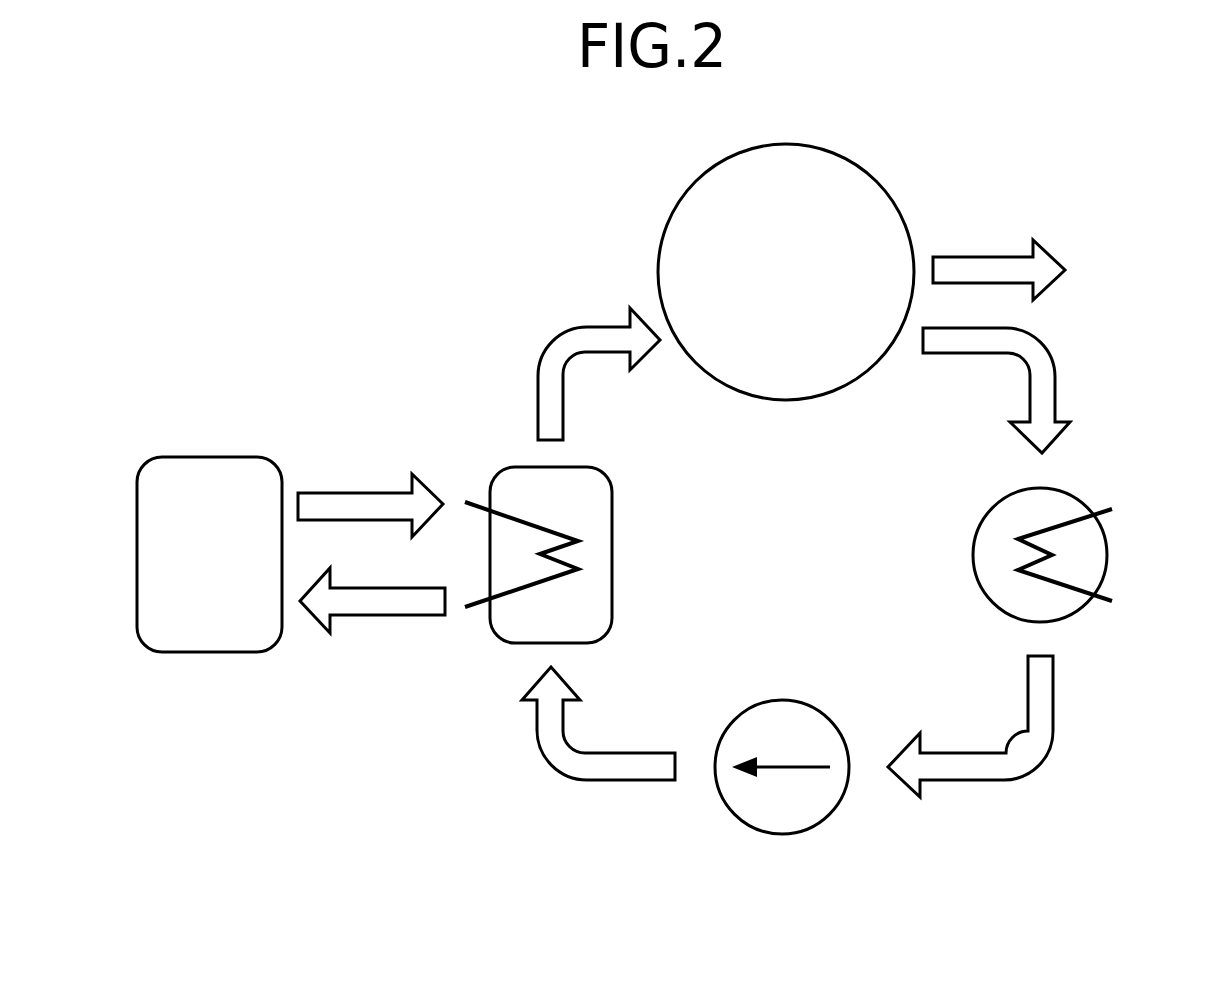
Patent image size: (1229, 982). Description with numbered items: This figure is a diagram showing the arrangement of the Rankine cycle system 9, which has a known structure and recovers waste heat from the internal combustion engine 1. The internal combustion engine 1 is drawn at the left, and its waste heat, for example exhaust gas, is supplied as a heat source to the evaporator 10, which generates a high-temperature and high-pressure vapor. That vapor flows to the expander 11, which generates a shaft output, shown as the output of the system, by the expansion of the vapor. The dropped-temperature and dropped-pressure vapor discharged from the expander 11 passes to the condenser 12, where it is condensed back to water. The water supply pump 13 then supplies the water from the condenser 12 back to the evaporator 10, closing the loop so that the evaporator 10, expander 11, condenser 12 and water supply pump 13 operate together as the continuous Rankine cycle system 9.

The internal combustion engine 1 is at (211, 450).
The Rankine cycle system 9 is at (592, 266).
The evaporator 10 is at (513, 485).
The expander 11 is at (876, 208).
The condenser 12 is at (1060, 502).
The water supply pump 13 is at (797, 813).